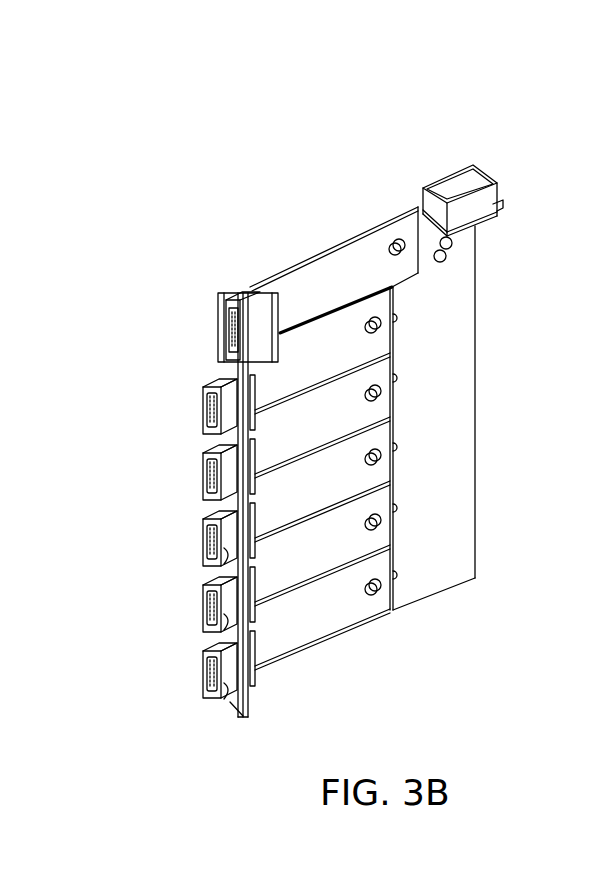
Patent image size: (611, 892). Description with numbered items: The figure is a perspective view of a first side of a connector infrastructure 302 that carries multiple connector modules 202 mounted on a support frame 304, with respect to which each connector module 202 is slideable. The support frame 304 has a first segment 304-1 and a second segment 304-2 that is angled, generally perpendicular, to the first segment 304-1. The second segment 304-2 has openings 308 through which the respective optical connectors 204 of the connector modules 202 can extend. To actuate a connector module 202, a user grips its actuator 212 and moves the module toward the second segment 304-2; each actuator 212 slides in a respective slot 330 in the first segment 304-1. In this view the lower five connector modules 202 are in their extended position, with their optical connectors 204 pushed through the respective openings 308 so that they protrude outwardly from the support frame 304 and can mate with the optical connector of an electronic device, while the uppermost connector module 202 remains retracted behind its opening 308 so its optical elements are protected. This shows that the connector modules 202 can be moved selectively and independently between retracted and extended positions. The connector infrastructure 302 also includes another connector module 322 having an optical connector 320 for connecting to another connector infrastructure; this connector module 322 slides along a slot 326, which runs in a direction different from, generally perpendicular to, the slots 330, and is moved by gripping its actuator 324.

The connector infrastructure 302 is at (512, 135).
The support frame 304 is at (455, 573).
The first segment 304-1 is at (278, 267).
The second segment 304-2 is at (240, 305).
The optical connector 320 is at (490, 173).
The connector module 322 is at (470, 232).
The actuator 324 is at (440, 250).
The slot 326 is at (440, 260).
The actuator 212 is at (402, 256).
The slot 330 is at (398, 262).
The opening 308 is at (232, 352).
The connector module 202 is at (328, 340).
The optical connector 204 is at (243, 298).